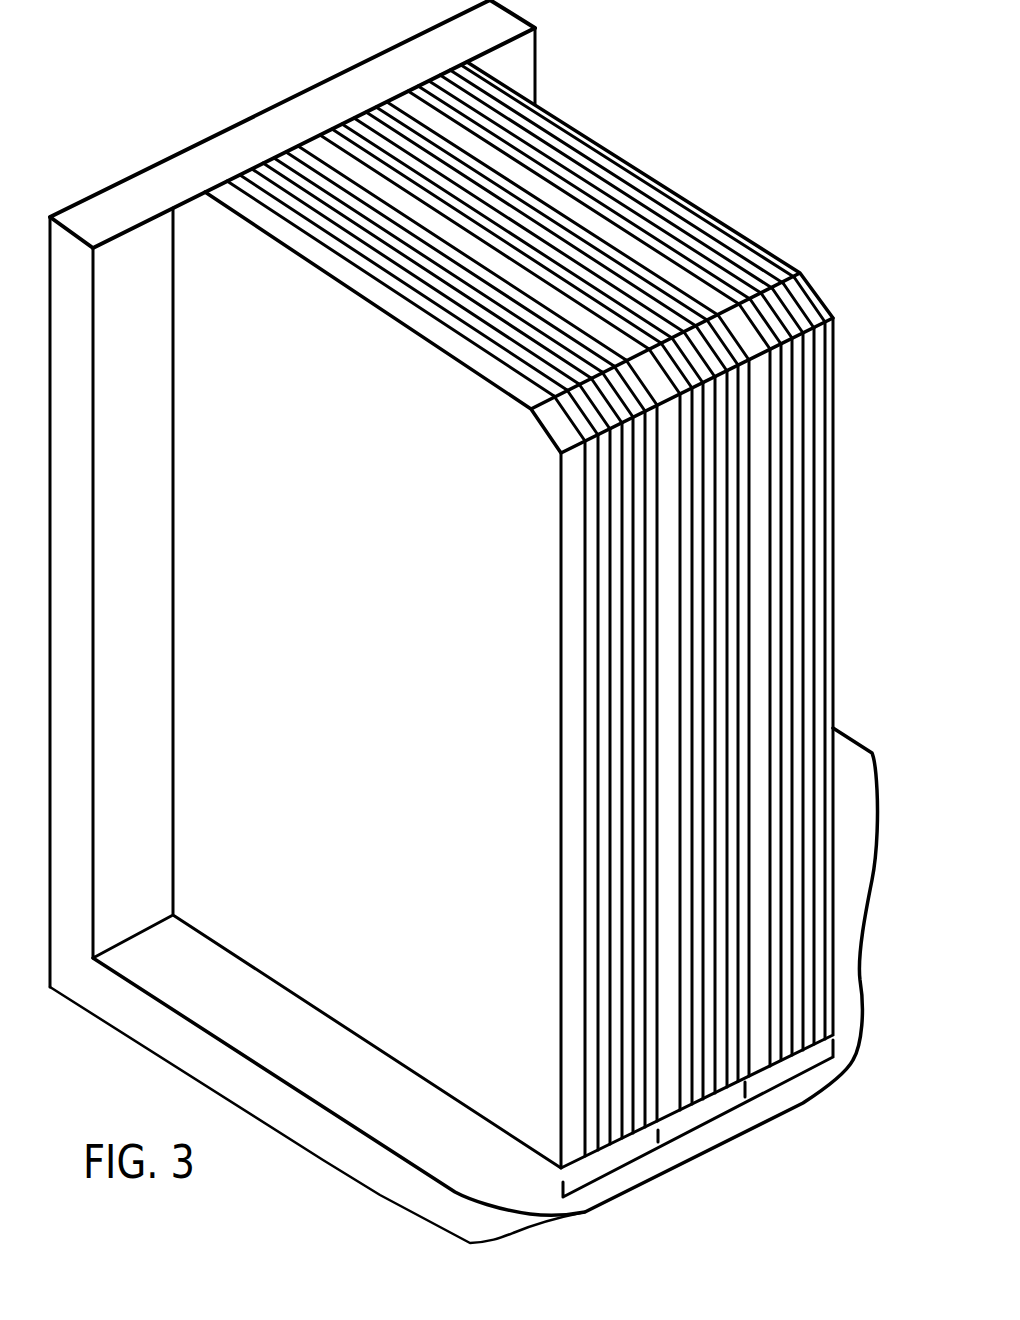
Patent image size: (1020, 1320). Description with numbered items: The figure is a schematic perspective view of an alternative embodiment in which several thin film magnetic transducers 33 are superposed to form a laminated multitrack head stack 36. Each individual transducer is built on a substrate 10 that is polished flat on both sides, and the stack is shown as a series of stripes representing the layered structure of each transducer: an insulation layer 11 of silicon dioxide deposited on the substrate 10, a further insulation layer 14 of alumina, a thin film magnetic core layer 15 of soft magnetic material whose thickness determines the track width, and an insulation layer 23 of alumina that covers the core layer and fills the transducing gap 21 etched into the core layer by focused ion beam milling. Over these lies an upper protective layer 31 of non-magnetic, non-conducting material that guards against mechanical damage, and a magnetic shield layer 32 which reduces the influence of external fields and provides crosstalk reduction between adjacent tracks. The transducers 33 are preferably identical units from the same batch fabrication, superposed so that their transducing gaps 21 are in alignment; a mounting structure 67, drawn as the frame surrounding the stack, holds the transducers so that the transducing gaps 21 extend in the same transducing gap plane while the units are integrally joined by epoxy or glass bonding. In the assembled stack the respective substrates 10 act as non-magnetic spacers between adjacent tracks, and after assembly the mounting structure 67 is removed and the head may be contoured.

The mounting structure 67 is at (248, 118).
The substrate 10 is at (226, 200).
The insulation layer 11 is at (477, 137).
The insulation layer 14 is at (785, 497).
The thin film magnetic core layer 15 is at (605, 345).
The transducing gap 21 is at (523, 240).
The insulation layer 23 is at (807, 683).
The upper protective layer 31 is at (817, 763).
The magnetic shield layer 32 is at (578, 325).
The thin film transducer 33 is at (618, 1172).
The laminated multitrack head stack 36 is at (893, 409).